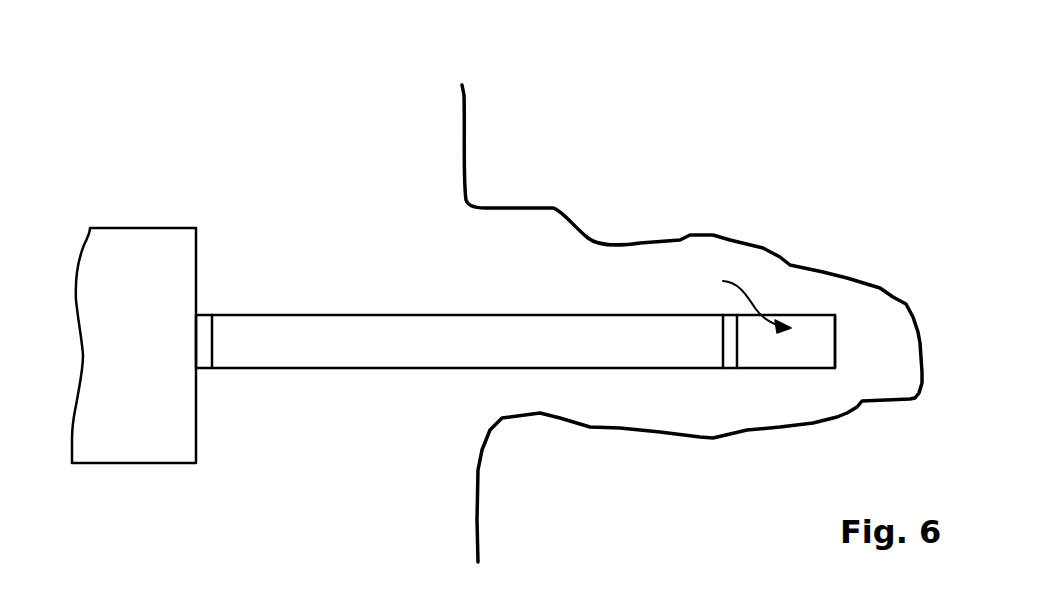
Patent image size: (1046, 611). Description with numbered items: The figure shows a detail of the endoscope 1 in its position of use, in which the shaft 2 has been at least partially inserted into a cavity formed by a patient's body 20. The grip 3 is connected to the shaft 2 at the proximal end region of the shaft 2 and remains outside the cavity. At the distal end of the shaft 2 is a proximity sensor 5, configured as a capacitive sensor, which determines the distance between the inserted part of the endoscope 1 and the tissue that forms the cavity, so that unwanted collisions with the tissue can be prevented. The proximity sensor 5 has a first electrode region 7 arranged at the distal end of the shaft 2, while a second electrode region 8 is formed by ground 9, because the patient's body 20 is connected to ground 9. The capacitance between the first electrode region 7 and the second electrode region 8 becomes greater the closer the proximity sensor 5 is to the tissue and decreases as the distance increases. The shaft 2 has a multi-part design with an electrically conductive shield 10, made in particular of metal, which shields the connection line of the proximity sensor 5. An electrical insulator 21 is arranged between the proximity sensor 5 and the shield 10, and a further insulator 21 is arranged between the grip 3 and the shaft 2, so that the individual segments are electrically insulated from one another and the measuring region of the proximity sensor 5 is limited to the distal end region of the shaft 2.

The endoscope 1 is at (366, 162).
The shaft 2 is at (316, 352).
The grip 3 is at (148, 246).
The proximity sensor 5 is at (808, 341).
The first electrode region 7 is at (747, 296).
The second electrode region 8 is at (883, 270).
The ground 9 is at (837, 158).
The shield 10 is at (444, 350).
The patient's body 20 is at (692, 323).
The insulator 21 is at (205, 352).